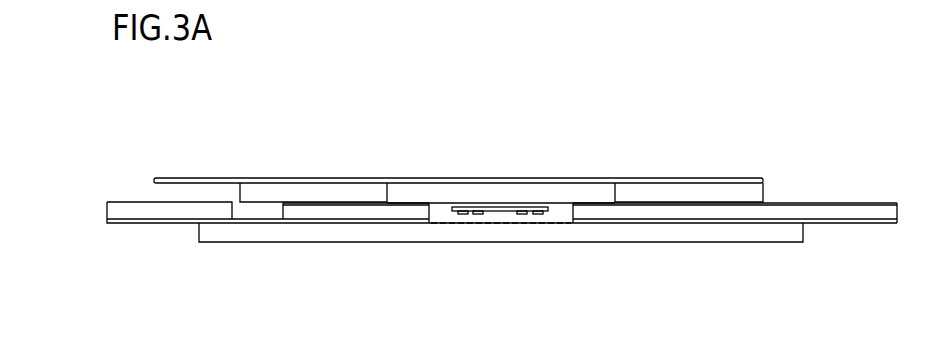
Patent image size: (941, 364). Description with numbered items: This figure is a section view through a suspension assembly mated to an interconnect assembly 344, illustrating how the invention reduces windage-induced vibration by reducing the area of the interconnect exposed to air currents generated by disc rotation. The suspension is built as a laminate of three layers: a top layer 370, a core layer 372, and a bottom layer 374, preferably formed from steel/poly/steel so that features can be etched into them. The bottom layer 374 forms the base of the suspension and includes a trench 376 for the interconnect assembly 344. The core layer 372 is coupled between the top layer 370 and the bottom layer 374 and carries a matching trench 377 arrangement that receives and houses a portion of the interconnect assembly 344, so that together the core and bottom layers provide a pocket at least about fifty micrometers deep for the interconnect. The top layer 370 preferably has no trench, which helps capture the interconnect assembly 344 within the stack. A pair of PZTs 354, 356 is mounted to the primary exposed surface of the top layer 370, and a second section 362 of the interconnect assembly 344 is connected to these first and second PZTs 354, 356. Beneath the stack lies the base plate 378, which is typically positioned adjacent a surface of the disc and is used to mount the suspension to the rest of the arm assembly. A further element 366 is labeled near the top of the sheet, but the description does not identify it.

The interconnect assembly 344 is at (473, 208).
The first PZT 354 is at (748, 193).
The second PZT 356 is at (247, 192).
The second section of the interconnect assembly 362 is at (477, 179).
The upper element 366 is at (792, 0).
The top layer 370 is at (593, 202).
The core layer 372 is at (643, 214).
The bottom layer 374 is at (858, 220).
The trench 376 is at (573, 212).
The trench arrangement 377 is at (572, 213).
The base plate 378 is at (777, 237).